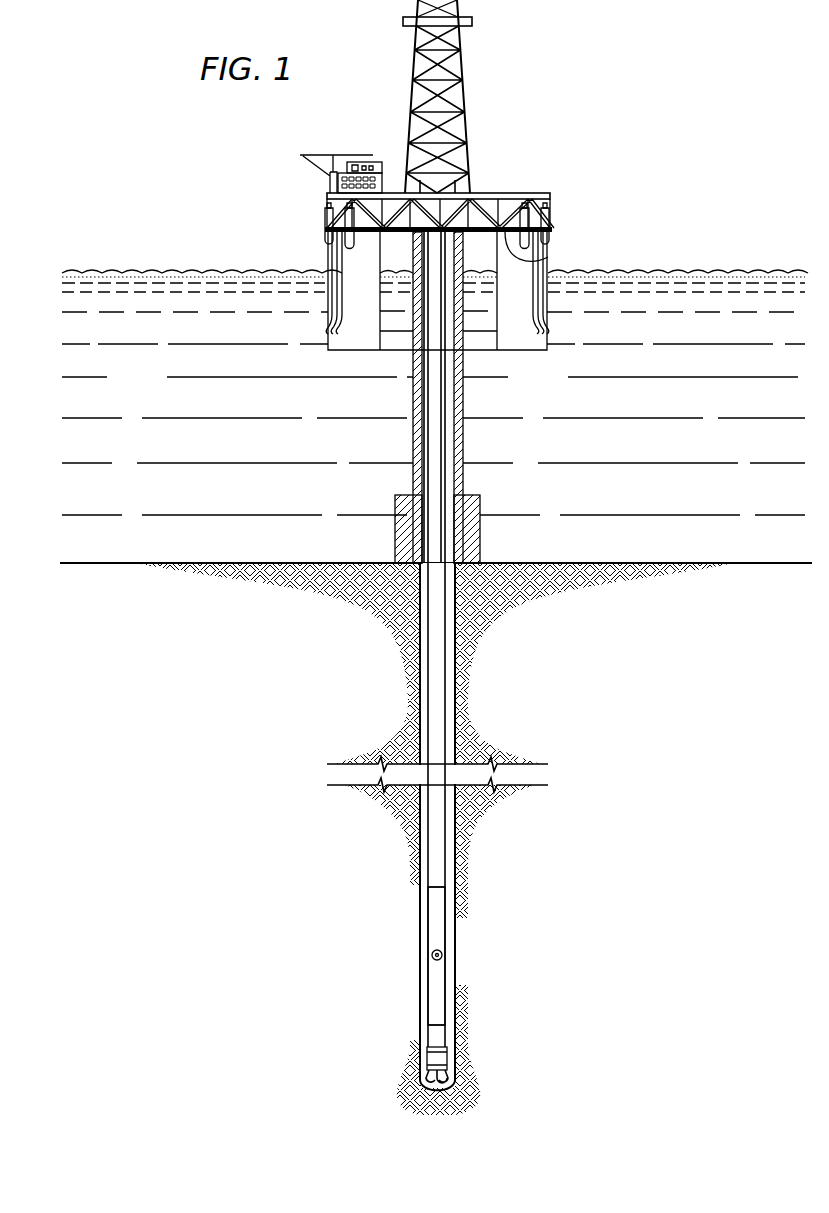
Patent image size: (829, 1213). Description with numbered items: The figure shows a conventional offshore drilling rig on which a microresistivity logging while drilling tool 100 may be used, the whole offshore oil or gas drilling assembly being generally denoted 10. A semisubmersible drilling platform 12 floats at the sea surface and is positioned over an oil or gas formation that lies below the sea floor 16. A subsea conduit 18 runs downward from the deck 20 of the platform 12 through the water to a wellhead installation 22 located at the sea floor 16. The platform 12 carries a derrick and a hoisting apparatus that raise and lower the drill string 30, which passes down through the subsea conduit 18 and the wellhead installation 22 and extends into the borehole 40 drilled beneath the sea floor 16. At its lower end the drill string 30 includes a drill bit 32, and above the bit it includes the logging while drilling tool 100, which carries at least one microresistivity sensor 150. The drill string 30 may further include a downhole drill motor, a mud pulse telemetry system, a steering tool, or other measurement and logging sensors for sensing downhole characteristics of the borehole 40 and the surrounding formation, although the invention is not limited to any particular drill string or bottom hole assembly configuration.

The offshore oil or gas drilling assembly 10 is at (531, 89).
The semisubmersible drilling platform 12 is at (540, 193).
The sea floor 16 is at (688, 563).
The subsea conduit 18 is at (462, 440).
The deck 20 is at (548, 257).
The wellhead installation 22 is at (478, 492).
The drill string 30 is at (438, 382).
The drill bit 32 is at (450, 1080).
The borehole 40 is at (448, 678).
The microresistivity logging while drilling tool 100 is at (428, 910).
The microresistivity sensor 150 is at (434, 960).